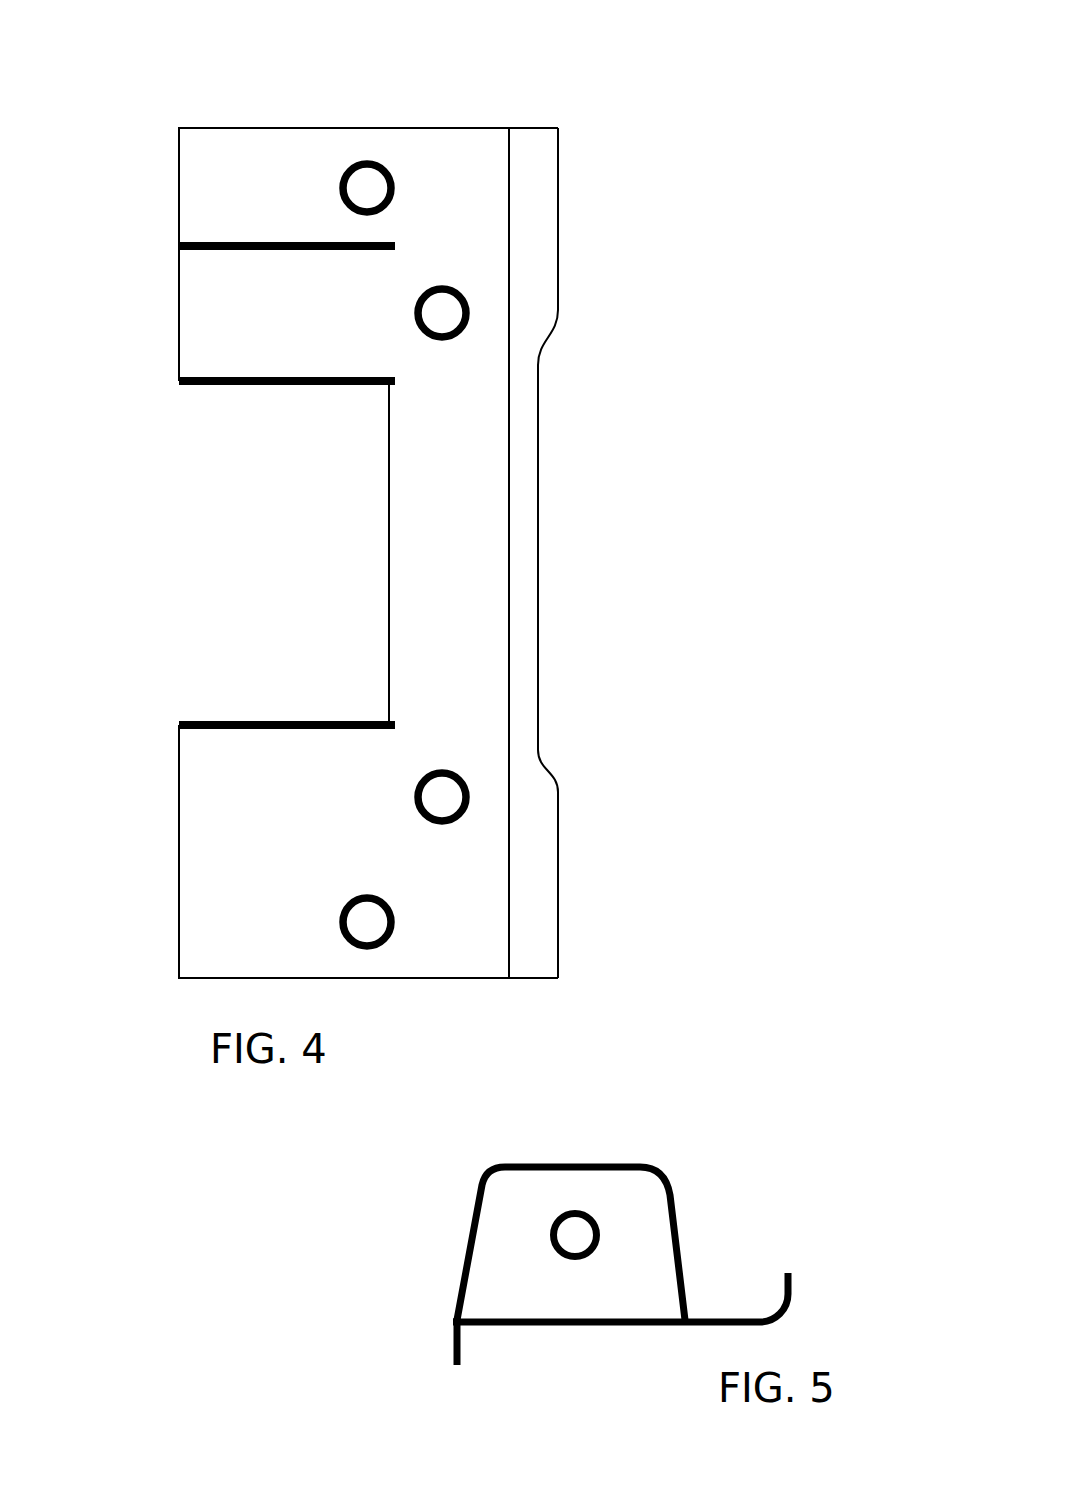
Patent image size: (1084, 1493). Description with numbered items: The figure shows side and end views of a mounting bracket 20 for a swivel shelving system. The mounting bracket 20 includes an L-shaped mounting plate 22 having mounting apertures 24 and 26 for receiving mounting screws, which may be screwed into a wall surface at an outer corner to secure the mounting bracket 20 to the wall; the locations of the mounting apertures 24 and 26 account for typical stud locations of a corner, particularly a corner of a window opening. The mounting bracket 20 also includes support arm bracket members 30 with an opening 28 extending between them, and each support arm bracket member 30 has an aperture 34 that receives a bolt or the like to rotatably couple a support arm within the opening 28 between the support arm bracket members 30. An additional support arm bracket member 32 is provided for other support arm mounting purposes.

In FIG. 4, the mounting bracket 20 is at (389, 530).
In FIG. 5, the mounting bracket 20 is at (609, 1210).
In FIG. 4, the L-shaped mounting plate 22 is at (476, 175).
In FIG. 5, the L-shaped mounting plate 22 is at (692, 1325).
In FIG. 4, the mounting aperture 24 is at (364, 190).
In FIG. 4, the mounting aperture 26 is at (442, 323).
In FIG. 4, the opening 28 is at (275, 532).
In FIG. 4, the support arm bracket member 30 is at (287, 383).
In FIG. 5, the support arm bracket member 30 is at (508, 1230).
In FIG. 4, the additional support arm bracket member 32 is at (265, 242).
In FIG. 5, the aperture 34 is at (573, 1233).